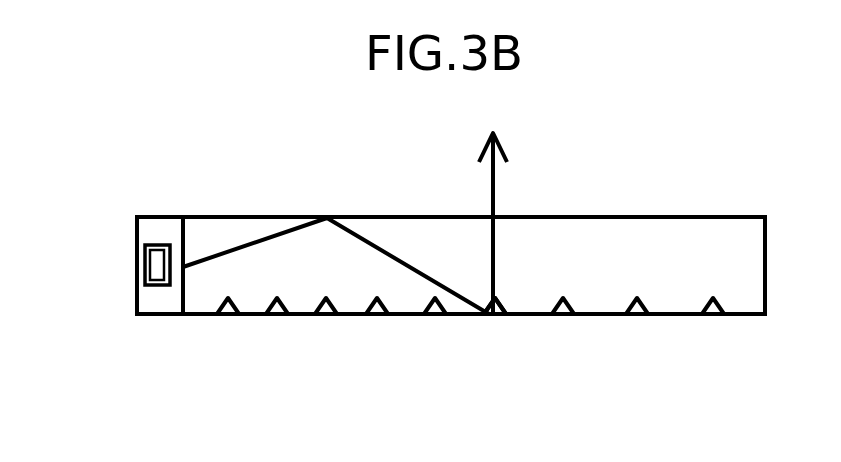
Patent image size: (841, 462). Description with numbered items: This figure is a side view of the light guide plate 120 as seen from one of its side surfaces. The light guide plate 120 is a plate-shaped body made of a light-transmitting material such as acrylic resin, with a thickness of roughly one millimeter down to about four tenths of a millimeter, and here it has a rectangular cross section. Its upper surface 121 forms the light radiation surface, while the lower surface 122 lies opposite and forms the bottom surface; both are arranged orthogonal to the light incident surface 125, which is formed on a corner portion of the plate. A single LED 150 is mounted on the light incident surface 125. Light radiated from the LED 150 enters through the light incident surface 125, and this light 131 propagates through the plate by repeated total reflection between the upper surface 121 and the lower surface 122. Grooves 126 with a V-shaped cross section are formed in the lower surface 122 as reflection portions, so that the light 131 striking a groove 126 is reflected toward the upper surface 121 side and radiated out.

The light guide plate 120 is at (352, 286).
The upper surface 121 is at (590, 217).
The lower surface 122 is at (605, 320).
The light incident surface 125 is at (148, 229).
The groove 126 is at (495, 318).
The light 131 is at (258, 242).
The LED 150 is at (152, 268).